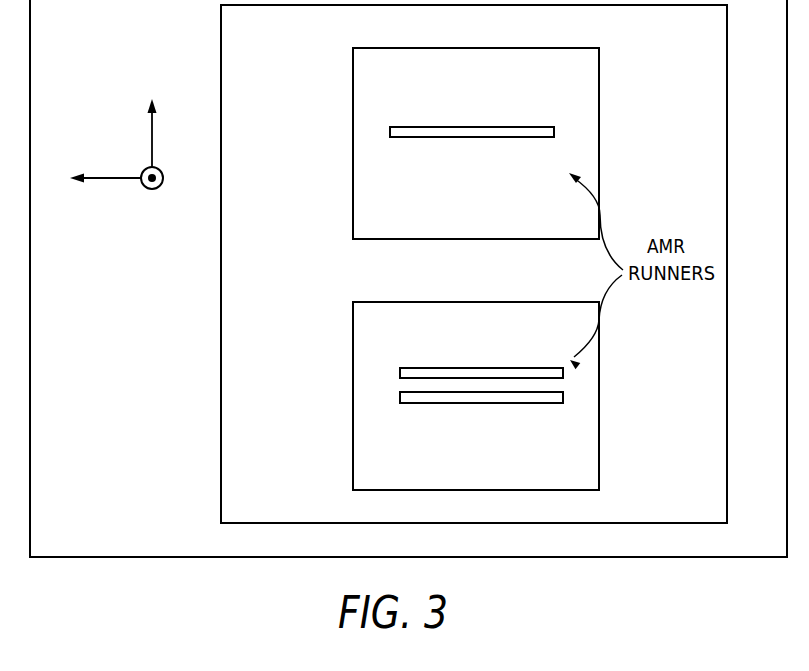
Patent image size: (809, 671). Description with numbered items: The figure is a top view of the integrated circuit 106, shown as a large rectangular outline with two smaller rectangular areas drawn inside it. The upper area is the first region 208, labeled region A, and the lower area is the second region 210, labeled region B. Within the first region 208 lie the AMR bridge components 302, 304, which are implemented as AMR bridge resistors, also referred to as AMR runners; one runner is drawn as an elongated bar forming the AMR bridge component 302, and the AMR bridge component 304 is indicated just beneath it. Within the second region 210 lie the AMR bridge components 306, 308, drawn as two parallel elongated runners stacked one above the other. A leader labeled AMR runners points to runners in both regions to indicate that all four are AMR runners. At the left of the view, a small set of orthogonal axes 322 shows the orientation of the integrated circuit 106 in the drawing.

The integrated circuit 106 is at (282, 501).
The first region 208 is at (576, 82).
The second region 210 is at (576, 481).
The AMR bridge component 302 is at (555, 132).
The AMR bridge component 304 is at (545, 157).
The AMR bridge component 306 is at (564, 373).
The AMR bridge component 308 is at (564, 397).
The coordinate axes 322 is at (133, 200).